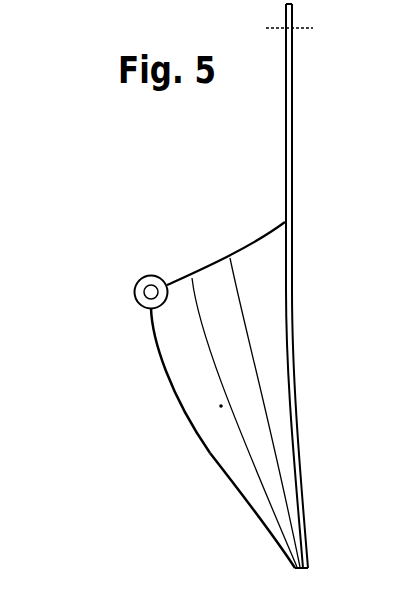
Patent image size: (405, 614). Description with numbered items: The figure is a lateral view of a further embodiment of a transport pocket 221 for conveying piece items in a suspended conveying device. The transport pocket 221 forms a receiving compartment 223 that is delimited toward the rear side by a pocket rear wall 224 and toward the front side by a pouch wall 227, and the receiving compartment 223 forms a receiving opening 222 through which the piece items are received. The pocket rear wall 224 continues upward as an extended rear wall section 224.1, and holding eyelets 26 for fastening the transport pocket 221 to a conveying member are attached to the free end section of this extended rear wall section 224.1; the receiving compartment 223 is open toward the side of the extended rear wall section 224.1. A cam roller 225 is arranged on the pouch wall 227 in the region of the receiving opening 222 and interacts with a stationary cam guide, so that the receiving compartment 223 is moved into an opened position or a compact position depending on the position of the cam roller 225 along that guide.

The holding eyelets 26 is at (296, 37).
The extended rear wall section 224.1 is at (292, 152).
The pocket rear wall 224 is at (293, 332).
The receiving opening 222 is at (213, 227).
The cam roller 225 is at (145, 285).
The transport pocket 221 is at (155, 357).
The receiving compartment 223 is at (221, 406).
The pouch wall 227 is at (227, 475).